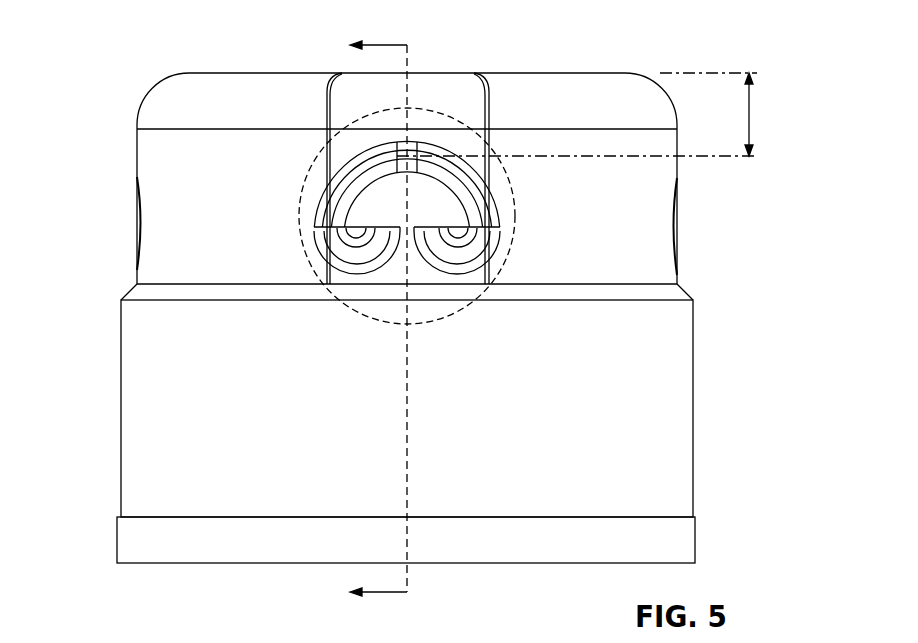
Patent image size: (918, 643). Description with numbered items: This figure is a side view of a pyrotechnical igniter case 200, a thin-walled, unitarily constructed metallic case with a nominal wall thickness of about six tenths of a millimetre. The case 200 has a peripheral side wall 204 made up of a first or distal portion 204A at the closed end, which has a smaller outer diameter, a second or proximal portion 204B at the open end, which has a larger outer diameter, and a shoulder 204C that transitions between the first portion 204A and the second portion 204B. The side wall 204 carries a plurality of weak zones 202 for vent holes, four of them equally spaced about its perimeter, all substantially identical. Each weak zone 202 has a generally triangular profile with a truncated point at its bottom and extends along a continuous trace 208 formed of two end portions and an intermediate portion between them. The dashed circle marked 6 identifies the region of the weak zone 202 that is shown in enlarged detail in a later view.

The pyrotechnical igniter case 200 is at (454, 312).
The weak zone 202 is at (421, 110).
The peripheral side wall 204 is at (410, 318).
The first portion 204A is at (677, 273).
The second portion 204B is at (693, 400).
The shoulder 204C is at (128, 291).
The continuous trace 208 is at (357, 272).
The detail region of FIG. 6 is at (300, 188).